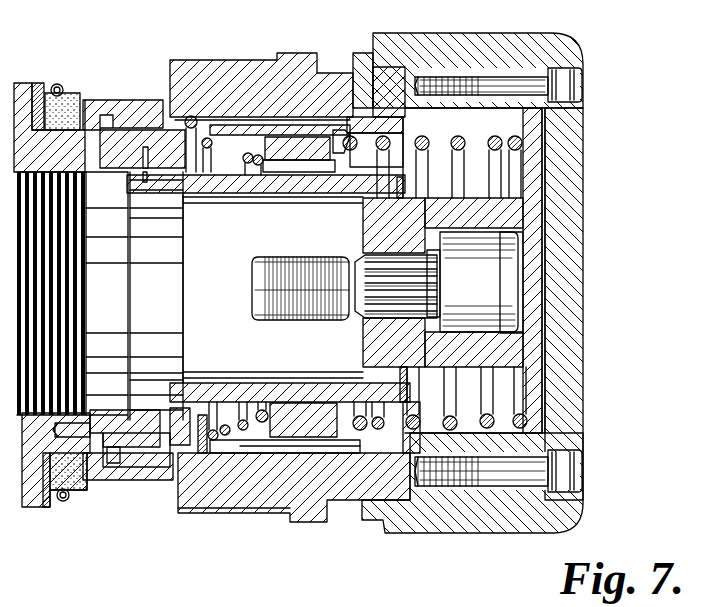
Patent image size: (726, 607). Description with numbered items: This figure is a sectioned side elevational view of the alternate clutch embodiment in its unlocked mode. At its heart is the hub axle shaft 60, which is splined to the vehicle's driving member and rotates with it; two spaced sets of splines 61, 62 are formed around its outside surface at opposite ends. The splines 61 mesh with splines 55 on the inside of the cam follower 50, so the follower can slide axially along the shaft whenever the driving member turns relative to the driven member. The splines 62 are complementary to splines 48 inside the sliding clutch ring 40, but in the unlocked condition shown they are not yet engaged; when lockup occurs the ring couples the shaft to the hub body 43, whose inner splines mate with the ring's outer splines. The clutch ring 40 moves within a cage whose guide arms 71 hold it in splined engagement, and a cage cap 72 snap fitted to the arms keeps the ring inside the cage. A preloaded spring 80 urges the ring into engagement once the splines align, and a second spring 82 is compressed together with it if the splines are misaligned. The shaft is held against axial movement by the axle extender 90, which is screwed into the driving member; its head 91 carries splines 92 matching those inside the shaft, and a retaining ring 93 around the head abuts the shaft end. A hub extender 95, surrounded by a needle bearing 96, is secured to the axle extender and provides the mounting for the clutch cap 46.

The sliding clutch ring 40 is at (282, 150).
The hub body 43 is at (533, 290).
The clutch cap 46 is at (568, 413).
The splines 48 is at (300, 167).
The cam follower 50 is at (157, 137).
The splines 55 is at (198, 197).
The hub axle shaft 60 is at (387, 183).
The splines 61 is at (193, 170).
The splines 62 is at (368, 167).
The guide arms 71 is at (287, 127).
The cage cap 72 is at (340, 136).
The spring 80 is at (236, 165).
The spring 82 is at (502, 133).
The axle extender 90 is at (425, 375).
The head 91 is at (500, 195).
The splines 92 is at (407, 220).
The retaining ring 93 is at (415, 172).
The hub extender 95 is at (472, 282).
The needle bearing 96 is at (500, 240).